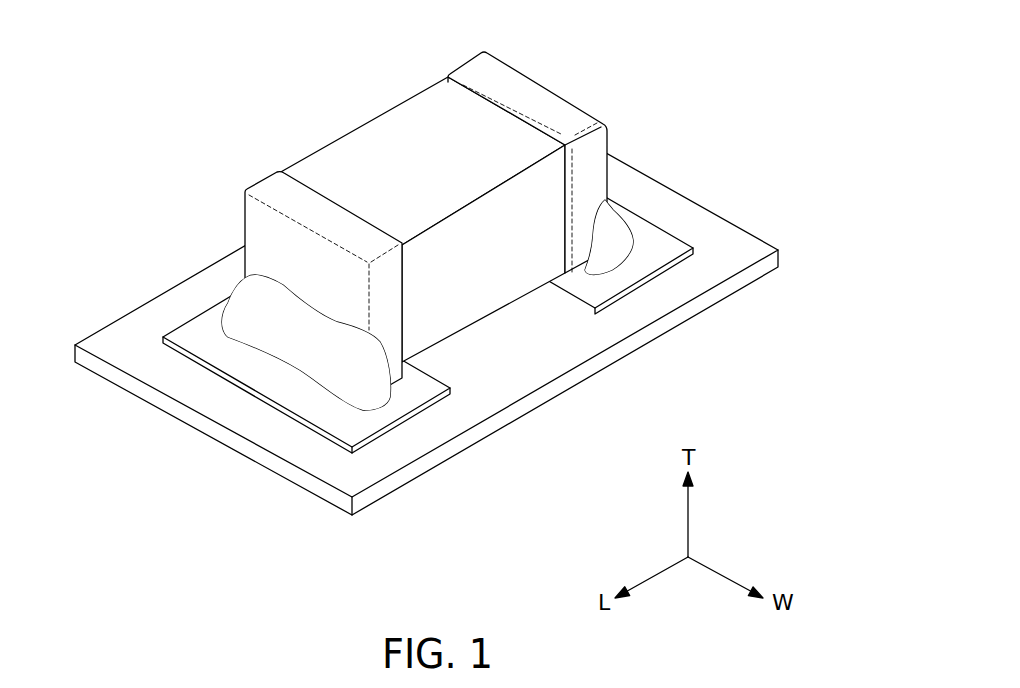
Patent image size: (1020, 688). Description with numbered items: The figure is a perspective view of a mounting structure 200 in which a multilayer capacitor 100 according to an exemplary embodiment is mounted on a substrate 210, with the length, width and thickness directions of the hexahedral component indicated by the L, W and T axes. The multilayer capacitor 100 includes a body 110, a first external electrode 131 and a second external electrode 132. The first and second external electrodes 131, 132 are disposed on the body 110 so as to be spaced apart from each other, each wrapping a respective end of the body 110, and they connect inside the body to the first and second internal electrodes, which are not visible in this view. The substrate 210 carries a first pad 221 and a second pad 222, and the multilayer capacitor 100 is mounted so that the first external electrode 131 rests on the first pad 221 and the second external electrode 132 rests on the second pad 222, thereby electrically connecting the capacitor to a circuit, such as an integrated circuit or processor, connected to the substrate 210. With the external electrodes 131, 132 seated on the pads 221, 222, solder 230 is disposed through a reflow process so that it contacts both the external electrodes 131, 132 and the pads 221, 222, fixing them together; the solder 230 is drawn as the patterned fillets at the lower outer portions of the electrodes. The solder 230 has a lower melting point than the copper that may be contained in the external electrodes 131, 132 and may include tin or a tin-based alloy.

The electronic component module 200 is at (426, 257).
The multilayer capacitor 100 is at (411, 198).
The body 110 is at (378, 145).
The first external electrode 131 is at (277, 192).
The second external electrode 132 is at (475, 78).
The substrate 210 is at (538, 352).
The first pad 221 is at (400, 402).
The second pad 222 is at (640, 263).
The solder 230 is at (290, 338).